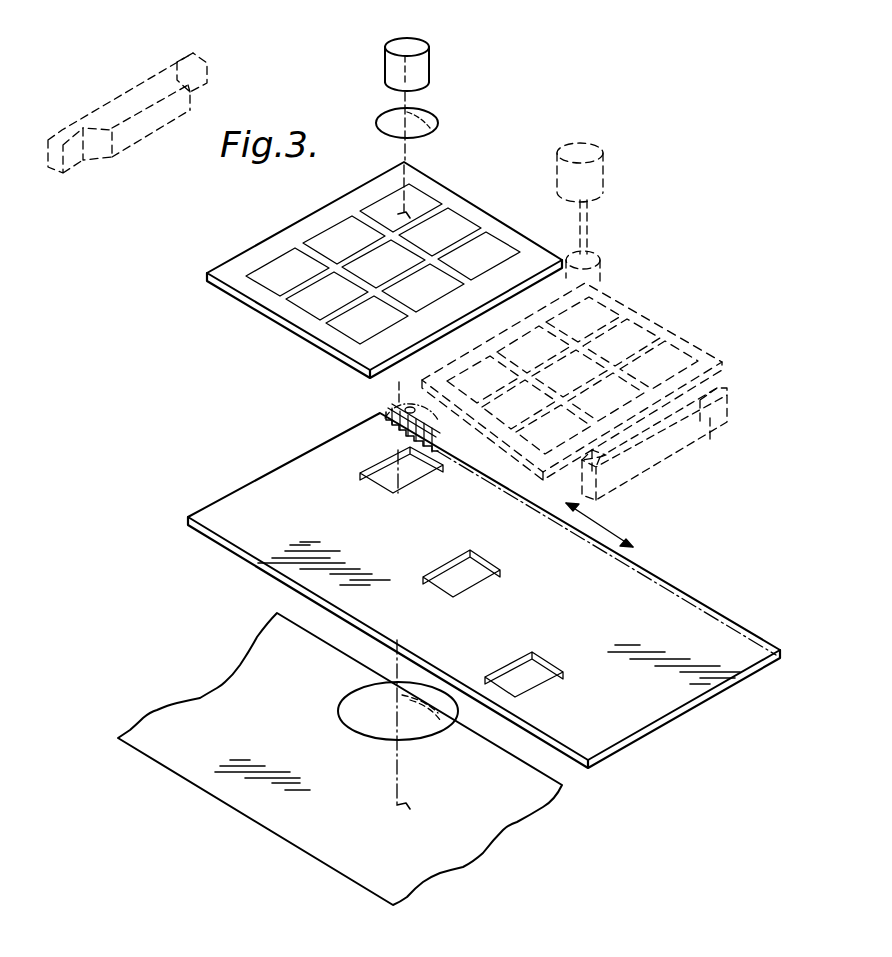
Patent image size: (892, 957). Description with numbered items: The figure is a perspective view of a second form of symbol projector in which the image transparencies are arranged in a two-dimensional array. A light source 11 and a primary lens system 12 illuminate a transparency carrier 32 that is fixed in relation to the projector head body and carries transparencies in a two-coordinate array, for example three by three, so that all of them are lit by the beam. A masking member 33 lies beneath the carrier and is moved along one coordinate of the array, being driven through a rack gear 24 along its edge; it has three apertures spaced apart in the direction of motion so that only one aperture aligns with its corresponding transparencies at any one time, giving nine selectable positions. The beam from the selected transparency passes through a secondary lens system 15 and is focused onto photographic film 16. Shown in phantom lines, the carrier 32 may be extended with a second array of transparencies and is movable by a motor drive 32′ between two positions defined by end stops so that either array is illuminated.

The light source 11 is at (420, 82).
The primary lens system 12 is at (428, 126).
The transparency carrier 32 is at (568, 262).
The motor drive 32′ is at (590, 178).
The rack gear 24 is at (433, 430).
The masking member 33 is at (553, 568).
The secondary lens system 15 is at (357, 702).
The photographic film 16 is at (292, 825).